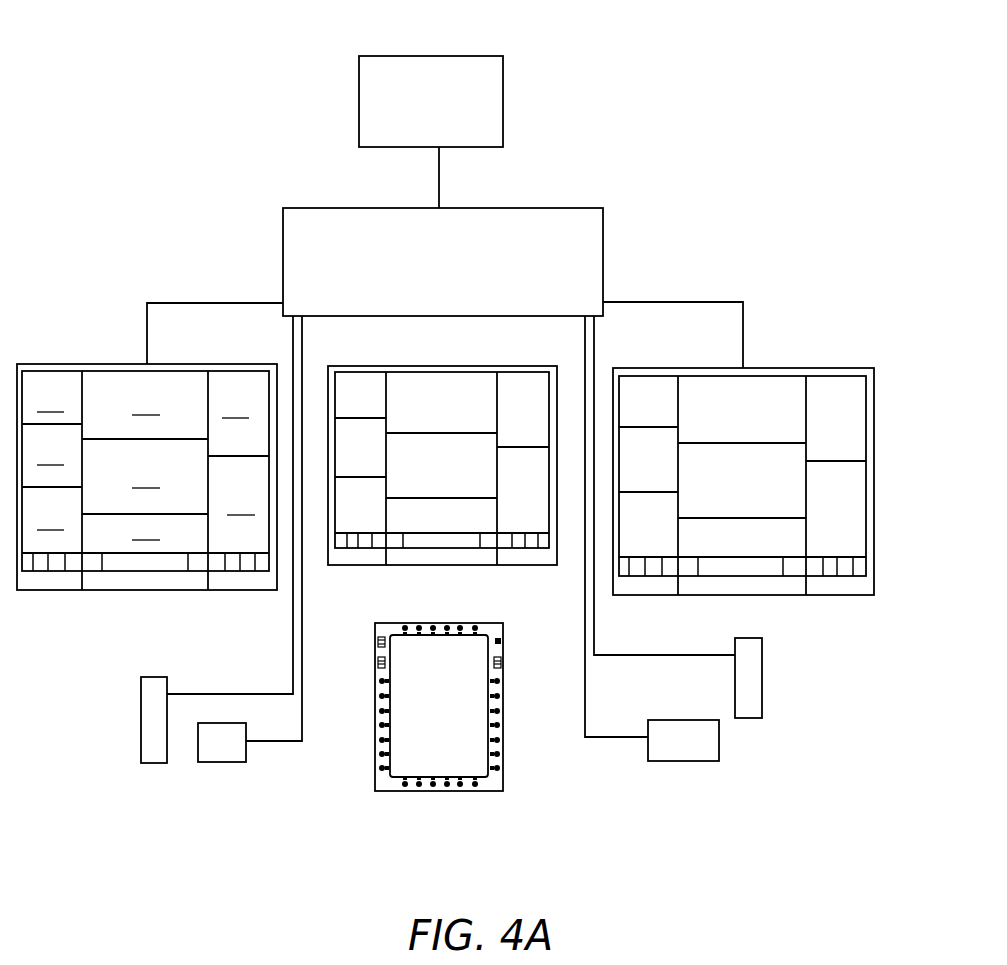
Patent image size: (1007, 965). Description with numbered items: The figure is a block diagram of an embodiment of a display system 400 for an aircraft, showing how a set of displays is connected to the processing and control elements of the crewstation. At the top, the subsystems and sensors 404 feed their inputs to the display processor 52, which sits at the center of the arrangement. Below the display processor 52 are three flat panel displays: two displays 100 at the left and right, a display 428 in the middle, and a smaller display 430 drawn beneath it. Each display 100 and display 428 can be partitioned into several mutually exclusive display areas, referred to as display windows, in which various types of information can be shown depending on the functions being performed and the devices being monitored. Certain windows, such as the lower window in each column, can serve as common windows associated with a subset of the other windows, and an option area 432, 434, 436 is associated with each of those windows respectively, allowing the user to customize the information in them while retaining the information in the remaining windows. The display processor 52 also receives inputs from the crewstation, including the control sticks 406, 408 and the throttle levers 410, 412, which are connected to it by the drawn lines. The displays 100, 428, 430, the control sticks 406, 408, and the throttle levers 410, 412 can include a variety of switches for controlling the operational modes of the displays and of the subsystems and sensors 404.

The display system 400 is at (186, 86).
The subsystems and sensors 404 is at (460, 54).
The display processor 52 is at (446, 292).
The display 100 is at (445, 476).
The display 428 is at (452, 366).
The display 430 is at (440, 622).
The option area 432 is at (42, 573).
The option area 434 is at (132, 573).
The option area 436 is at (223, 573).
The control stick 406 is at (140, 702).
The control stick 408 is at (762, 672).
The throttle lever 410 is at (241, 751).
The throttle lever 412 is at (702, 747).